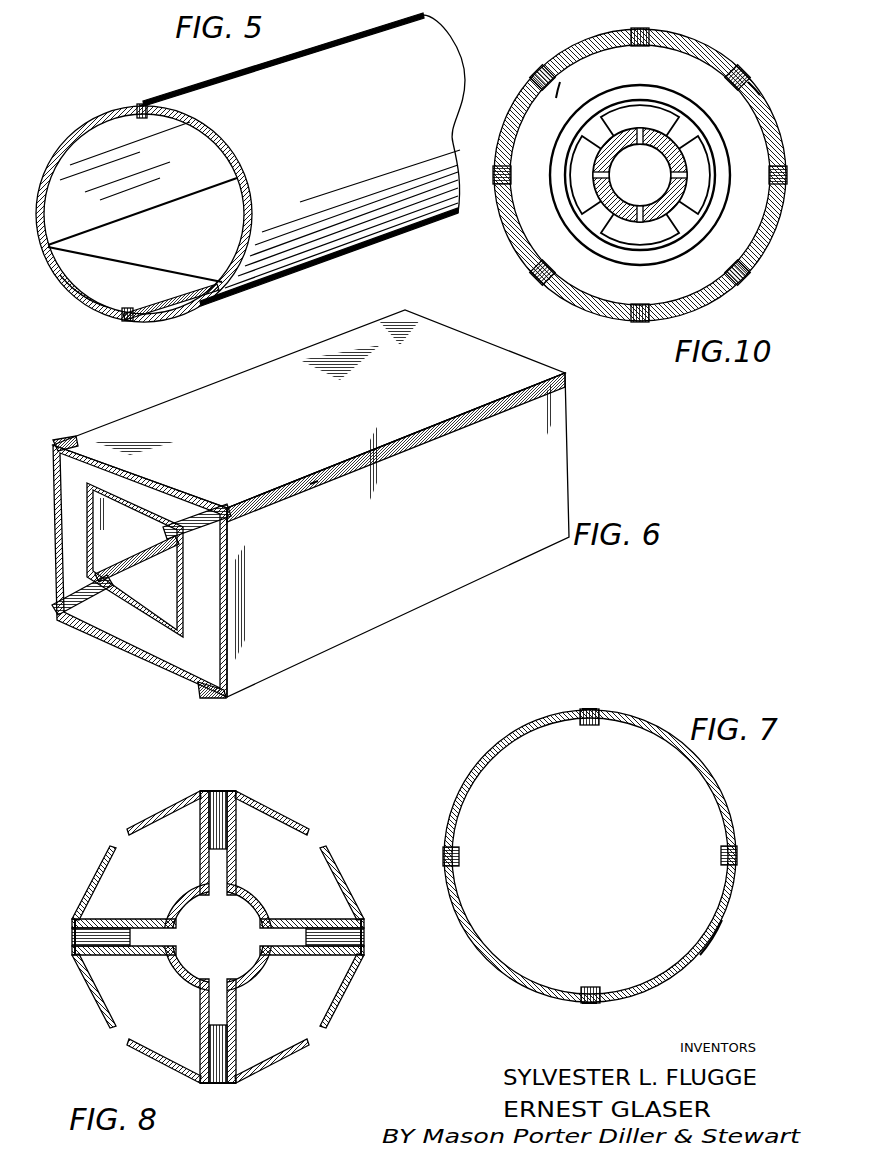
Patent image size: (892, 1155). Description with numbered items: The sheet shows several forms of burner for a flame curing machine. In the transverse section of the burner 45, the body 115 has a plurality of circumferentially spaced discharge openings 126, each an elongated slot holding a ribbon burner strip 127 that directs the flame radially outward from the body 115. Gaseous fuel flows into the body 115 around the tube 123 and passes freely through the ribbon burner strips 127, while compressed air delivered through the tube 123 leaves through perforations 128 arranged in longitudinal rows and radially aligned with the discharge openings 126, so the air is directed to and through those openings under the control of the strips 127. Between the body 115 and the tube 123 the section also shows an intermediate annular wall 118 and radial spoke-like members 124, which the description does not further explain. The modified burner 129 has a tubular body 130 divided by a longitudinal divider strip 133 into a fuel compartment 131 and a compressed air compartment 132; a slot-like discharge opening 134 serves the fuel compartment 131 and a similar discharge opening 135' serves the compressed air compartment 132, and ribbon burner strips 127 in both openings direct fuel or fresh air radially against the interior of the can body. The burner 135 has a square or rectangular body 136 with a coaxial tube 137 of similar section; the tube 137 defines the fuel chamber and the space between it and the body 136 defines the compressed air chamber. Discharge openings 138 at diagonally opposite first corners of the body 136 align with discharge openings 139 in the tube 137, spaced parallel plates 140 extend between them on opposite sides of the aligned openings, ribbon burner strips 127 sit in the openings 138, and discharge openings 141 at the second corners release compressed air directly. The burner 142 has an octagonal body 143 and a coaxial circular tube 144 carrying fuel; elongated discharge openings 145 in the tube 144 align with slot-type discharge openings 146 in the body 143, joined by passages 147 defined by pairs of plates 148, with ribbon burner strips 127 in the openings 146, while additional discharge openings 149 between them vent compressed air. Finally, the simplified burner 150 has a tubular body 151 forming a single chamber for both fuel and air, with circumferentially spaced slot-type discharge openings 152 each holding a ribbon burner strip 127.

In FIG. 10, the burner 45 is at (752, 62).
In FIG. 10, the body 115 is at (612, 318).
In FIG. 10, the intermediate tubular wall 118 is at (615, 260).
In FIG. 10, the tube 123 is at (668, 187).
In FIG. 10, the radial spokes 124 is at (682, 210).
In FIG. 10, the discharge openings 126 is at (650, 30).
In FIG. 5, the ribbon burner strip 127 is at (143, 103).
In FIG. 10, the ribbon burner strip 127 is at (556, 82).
In FIG. 6, the ribbon burner strip 127 is at (320, 495).
In FIG. 8, the ribbon burner strip 127 is at (222, 790).
In FIG. 7, the ribbon burner strip 127 is at (588, 725).
In FIG. 10, the perforations 128 is at (642, 136).
In FIG. 5, the burner 129 is at (318, 240).
In FIG. 5, the tubular body 130 is at (270, 284).
In FIG. 5, the fuel compartment 131 is at (200, 147).
In FIG. 5, the compressed air compartment 132 is at (100, 295).
In FIG. 5, the longitudinal divider strip 133 is at (157, 265).
In FIG. 5, the discharge opening 134 is at (138, 118).
In FIG. 5, the discharge opening 135' is at (171, 320).
In FIG. 6, the burner 135 is at (311, 503).
In FIG. 6, the body 136 is at (307, 652).
In FIG. 6, the tube 137 is at (158, 628).
In FIG. 6, the discharge openings 138 is at (252, 498).
In FIG. 6, the discharge openings 139 is at (165, 527).
In FIG. 6, the spaced parallel plates 140 is at (69, 584).
In FIG. 6, the discharge openings 141 is at (62, 440).
In FIG. 8, the burner 142 is at (350, 860).
In FIG. 8, the body 143 is at (268, 805).
In FIG. 8, the circular tube 144 is at (250, 985).
In FIG. 8, the discharge openings 145 is at (217, 882).
In FIG. 8, the discharge openings 146 is at (210, 792).
In FIG. 8, the passages 147 is at (170, 960).
In FIG. 8, the plates 148 is at (122, 918).
In FIG. 8, the discharge openings 149 is at (116, 832).
In FIG. 7, the burner 150 is at (664, 724).
In FIG. 7, the tubular body 151 is at (724, 918).
In FIG. 7, the discharge openings 152 is at (595, 708).